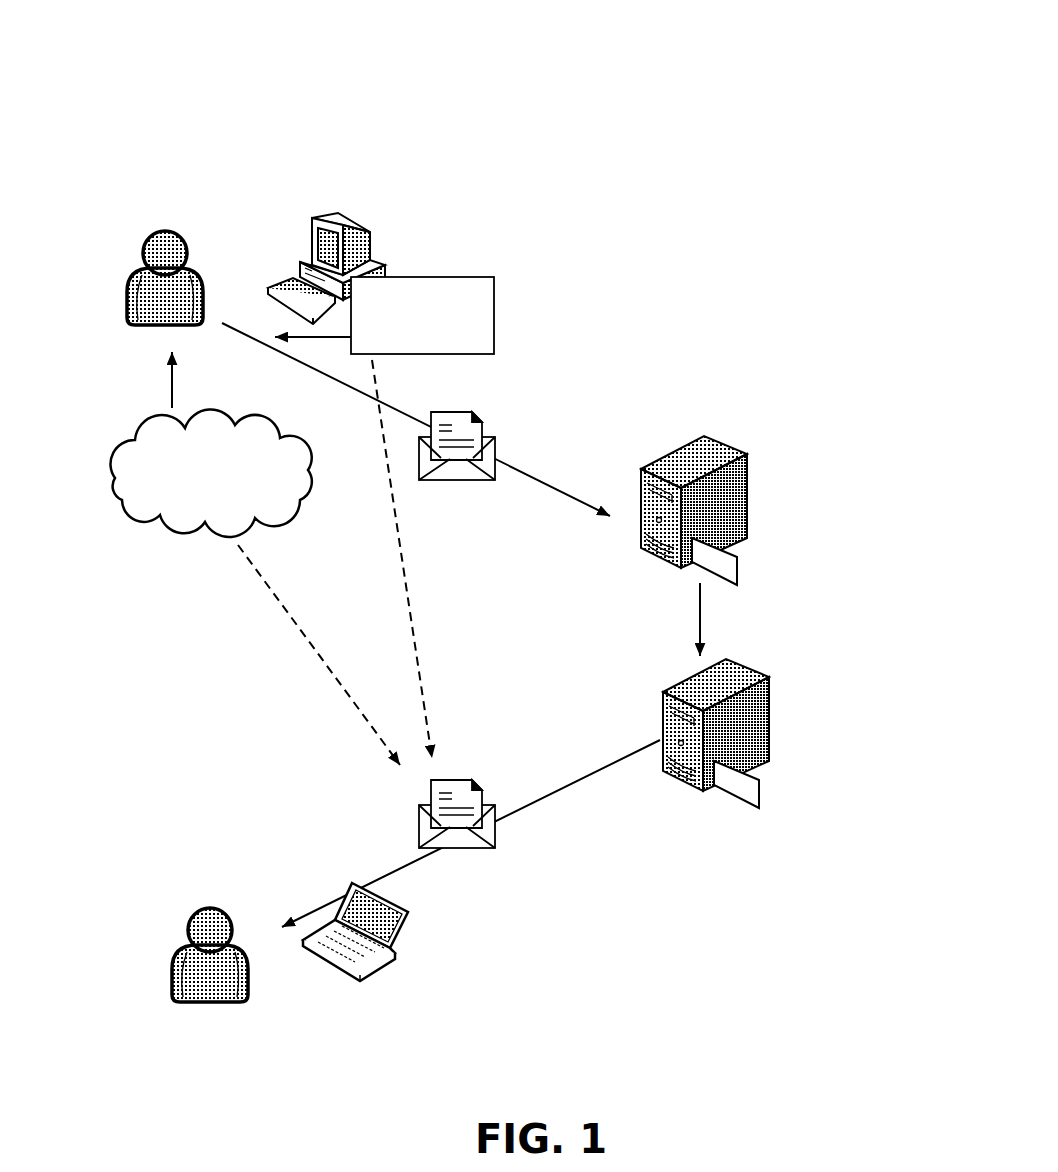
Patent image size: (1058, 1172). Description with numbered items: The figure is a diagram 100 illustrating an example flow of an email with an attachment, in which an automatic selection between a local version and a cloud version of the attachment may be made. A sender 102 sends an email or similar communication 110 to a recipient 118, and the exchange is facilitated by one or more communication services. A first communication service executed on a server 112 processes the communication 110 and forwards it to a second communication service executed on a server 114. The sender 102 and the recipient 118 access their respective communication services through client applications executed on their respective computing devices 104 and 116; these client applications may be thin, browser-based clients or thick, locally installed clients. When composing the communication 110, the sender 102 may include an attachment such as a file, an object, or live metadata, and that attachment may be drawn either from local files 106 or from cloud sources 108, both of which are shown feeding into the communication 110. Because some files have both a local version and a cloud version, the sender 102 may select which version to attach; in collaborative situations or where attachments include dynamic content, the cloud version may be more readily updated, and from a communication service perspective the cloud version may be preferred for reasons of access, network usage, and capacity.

The diagram 100 is at (841, 60).
The sender 102 is at (162, 211).
The computing device 104 is at (332, 192).
The local files 106 is at (463, 261).
The cloud sources 108 is at (139, 407).
The communication 110 is at (498, 412).
The server 112 is at (751, 477).
The server 114 is at (778, 696).
The computing device 116 is at (339, 874).
The recipient 118 is at (180, 913).